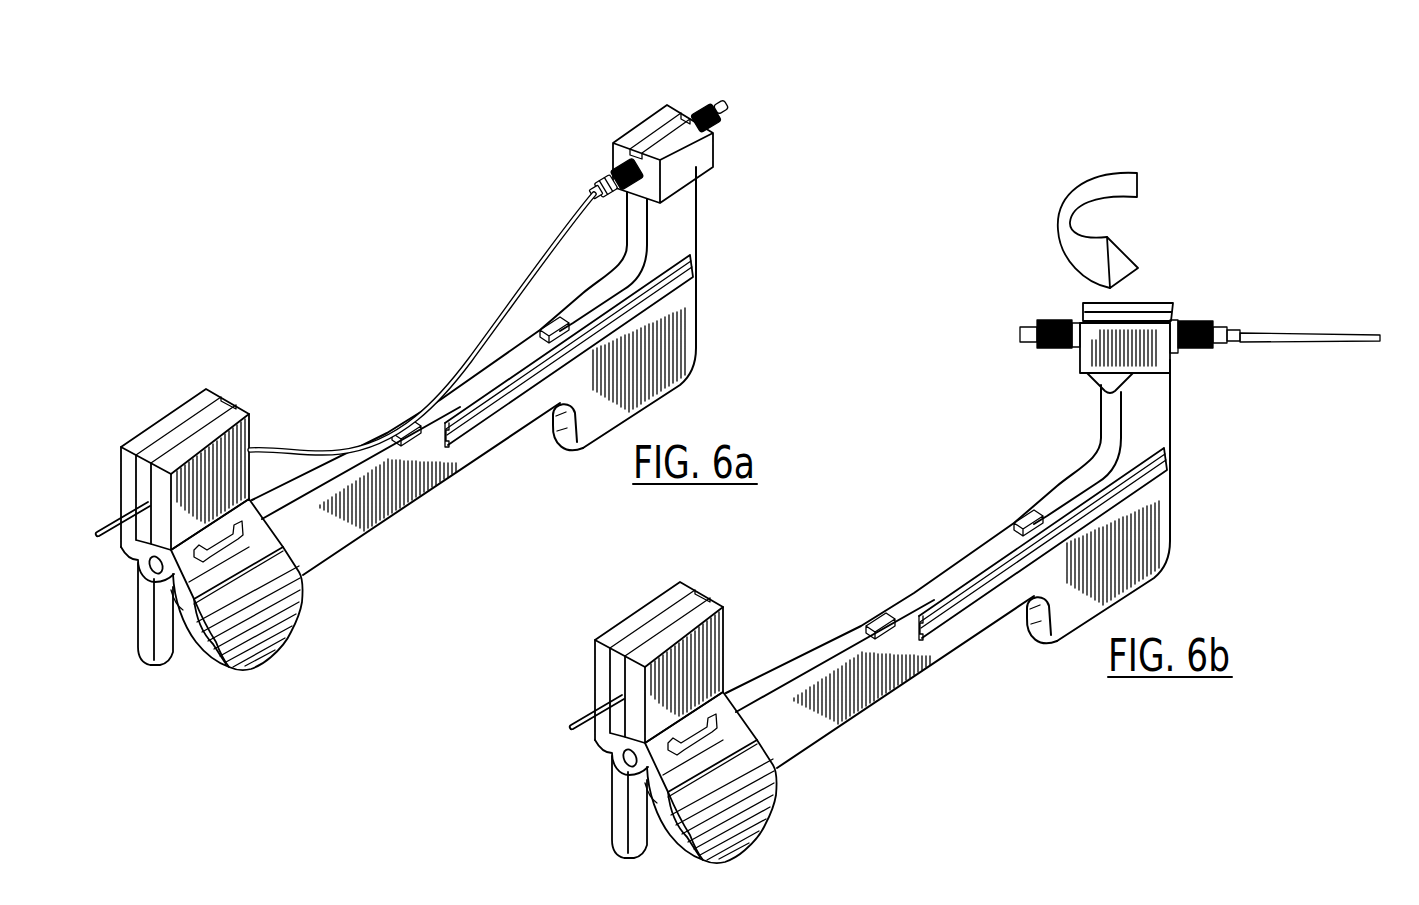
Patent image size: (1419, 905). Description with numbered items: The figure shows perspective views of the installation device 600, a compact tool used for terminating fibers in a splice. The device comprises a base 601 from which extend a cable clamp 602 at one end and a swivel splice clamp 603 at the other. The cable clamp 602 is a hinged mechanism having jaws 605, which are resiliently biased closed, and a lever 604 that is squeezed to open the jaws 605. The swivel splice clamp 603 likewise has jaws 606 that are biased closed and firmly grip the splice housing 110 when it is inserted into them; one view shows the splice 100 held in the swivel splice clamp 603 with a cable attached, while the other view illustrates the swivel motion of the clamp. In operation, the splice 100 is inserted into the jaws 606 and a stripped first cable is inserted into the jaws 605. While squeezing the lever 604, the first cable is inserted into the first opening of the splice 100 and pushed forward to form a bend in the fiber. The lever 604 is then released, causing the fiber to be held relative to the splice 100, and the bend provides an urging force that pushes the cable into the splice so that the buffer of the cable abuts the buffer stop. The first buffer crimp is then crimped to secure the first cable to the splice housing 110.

The splice 100 is at (724, 96).
The splice housing 110 is at (633, 151).
The installation device 600 is at (716, 371).
The base 601 is at (487, 440).
The cable clamp 602 is at (128, 474).
The swivel splice clamp 603 is at (703, 148).
The lever 604 is at (224, 663).
The jaws 605 is at (168, 424).
The jaws 606 is at (648, 124).